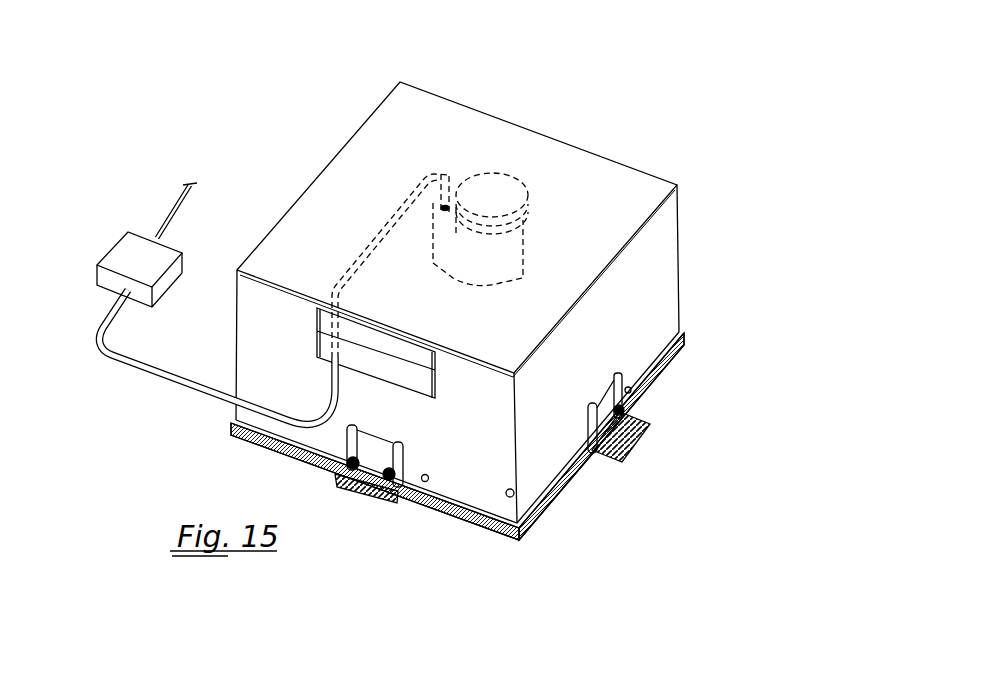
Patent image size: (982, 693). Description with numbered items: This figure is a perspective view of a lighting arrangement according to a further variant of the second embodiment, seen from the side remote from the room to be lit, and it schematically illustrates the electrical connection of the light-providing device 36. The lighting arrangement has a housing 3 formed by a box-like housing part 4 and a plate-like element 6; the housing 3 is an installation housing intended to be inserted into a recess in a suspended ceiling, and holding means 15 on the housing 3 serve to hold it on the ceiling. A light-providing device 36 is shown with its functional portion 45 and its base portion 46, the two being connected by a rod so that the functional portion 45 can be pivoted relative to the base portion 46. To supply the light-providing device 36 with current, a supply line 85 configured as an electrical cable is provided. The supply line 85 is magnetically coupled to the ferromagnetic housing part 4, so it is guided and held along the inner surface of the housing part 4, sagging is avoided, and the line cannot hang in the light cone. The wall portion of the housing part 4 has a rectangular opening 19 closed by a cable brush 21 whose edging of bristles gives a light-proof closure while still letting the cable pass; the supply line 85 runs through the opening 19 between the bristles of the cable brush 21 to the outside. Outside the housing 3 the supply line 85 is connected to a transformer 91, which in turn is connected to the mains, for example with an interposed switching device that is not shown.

The housing 3 is at (688, 346).
The housing part 4 is at (617, 235).
The plate-like element 6 is at (573, 488).
The holding means 15 is at (672, 454).
The opening 19 is at (410, 398).
The cable brush 21 is at (368, 375).
The light-providing device 36 is at (456, 152).
The functional portion 45 is at (530, 266).
The base portion 46 is at (503, 189).
The supply line 85 is at (383, 223).
The transformer 91 is at (123, 253).